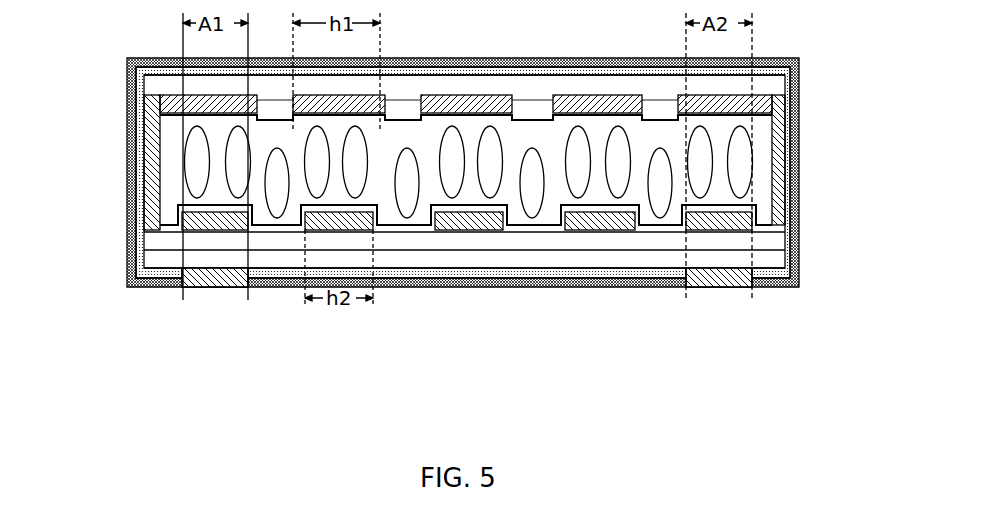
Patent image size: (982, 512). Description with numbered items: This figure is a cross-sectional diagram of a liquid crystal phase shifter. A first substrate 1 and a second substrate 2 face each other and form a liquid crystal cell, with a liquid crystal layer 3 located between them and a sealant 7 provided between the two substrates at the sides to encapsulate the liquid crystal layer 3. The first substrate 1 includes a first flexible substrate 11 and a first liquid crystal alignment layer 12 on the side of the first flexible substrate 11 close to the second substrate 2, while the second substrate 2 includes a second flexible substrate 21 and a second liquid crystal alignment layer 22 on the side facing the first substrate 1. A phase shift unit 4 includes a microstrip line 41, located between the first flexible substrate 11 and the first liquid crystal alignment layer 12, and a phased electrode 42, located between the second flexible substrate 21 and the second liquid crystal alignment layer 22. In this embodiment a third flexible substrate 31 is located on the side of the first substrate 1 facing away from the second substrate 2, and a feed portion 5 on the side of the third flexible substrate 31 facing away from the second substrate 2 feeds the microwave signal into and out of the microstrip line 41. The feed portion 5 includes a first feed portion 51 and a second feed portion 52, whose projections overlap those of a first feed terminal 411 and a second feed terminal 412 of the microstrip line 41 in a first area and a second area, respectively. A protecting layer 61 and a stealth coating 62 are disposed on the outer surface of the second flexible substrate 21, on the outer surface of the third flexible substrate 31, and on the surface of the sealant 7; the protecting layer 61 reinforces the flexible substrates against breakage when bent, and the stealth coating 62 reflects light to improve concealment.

The first substrate 1 is at (512, 220).
The first flexible substrate 11 is at (772, 243).
The first liquid crystal alignment layer 12 is at (768, 225).
The second substrate 2 is at (512, 89).
The second flexible substrate 21 is at (765, 82).
The second liquid crystal alignment layer 22 is at (772, 117).
The liquid crystal layer 3 is at (738, 167).
The third flexible substrate 31 is at (763, 260).
The phase shift unit 4 is at (413, 218).
The microstrip line 41 is at (428, 248).
The first feed terminal 411 is at (205, 225).
The second feed terminal 412 is at (743, 225).
The phased electrode 42 is at (172, 105).
The feed portion 5 is at (467, 349).
The first feed portion 51 is at (248, 283).
The second feed portion 52 is at (700, 278).
The protecting layer 61 is at (140, 233).
The stealth coating 62 is at (132, 208).
The sealant 7 is at (782, 135).